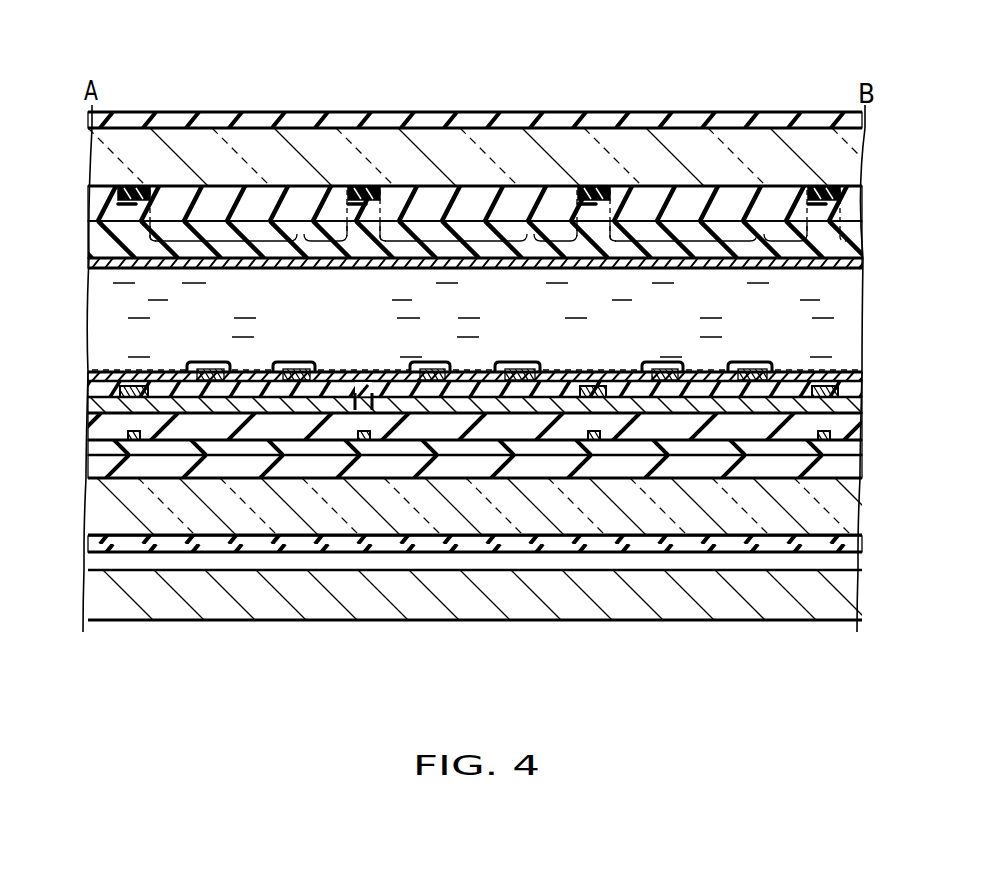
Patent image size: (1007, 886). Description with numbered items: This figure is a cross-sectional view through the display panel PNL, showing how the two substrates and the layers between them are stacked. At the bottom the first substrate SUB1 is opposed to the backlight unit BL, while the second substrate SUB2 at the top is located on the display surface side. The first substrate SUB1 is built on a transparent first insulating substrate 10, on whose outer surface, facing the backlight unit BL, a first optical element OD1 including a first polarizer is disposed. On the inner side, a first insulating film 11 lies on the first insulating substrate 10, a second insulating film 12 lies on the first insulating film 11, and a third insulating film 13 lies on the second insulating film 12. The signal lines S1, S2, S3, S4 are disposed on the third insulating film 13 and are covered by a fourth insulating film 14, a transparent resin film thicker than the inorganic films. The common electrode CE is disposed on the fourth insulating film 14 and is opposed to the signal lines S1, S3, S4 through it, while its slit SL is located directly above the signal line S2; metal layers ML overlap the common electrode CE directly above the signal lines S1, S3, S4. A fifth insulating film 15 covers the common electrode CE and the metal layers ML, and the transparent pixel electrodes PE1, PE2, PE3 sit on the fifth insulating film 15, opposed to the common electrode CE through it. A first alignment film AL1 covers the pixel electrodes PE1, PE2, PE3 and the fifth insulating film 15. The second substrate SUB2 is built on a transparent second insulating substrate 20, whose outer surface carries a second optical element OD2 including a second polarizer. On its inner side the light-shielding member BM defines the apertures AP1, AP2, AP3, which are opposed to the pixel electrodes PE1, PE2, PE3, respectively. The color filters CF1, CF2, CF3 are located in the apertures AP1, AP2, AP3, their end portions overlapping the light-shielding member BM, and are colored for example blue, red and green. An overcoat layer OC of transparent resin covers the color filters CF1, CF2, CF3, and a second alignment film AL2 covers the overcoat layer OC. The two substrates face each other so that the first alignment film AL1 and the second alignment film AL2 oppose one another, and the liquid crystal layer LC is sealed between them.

The display panel PNL is at (906, 127).
The second optical element OD2 is at (838, 122).
The second insulating substrate 20 is at (838, 165).
The second substrate SUB2 is at (878, 190).
The color filter CF1 is at (262, 210).
The color filter CF2 is at (482, 208).
The color filter CF3 is at (688, 208).
The light-shielding member BM is at (135, 187).
The overcoat layer OC is at (852, 241).
The aperture AP1 is at (300, 264).
The aperture AP2 is at (530, 264).
The aperture AP3 is at (760, 264).
The second alignment film AL2 is at (848, 266).
The liquid crystal layer LC is at (855, 308).
The first alignment film AL1 is at (818, 372).
The pixel electrode PE1 is at (294, 383).
The pixel electrode PE2 is at (518, 383).
The pixel electrode PE3 is at (750, 383).
The fifth insulating film 15 is at (850, 384).
The slit SL is at (371, 392).
The metal layer ML is at (147, 400).
The fourth insulating film 14 is at (858, 413).
The common electrode CE is at (680, 405).
The first substrate SUB1 is at (880, 402).
The third insulating film 13 is at (852, 430).
The signal line S1 is at (133, 441).
The signal line S2 is at (364, 441).
The signal line S3 is at (594, 441).
The signal line S4 is at (826, 441).
The second insulating film 12 is at (852, 452).
The first insulating film 11 is at (852, 470).
The first insulating substrate 10 is at (852, 512).
The first optical element OD1 is at (852, 548).
The backlight unit BL is at (852, 598).